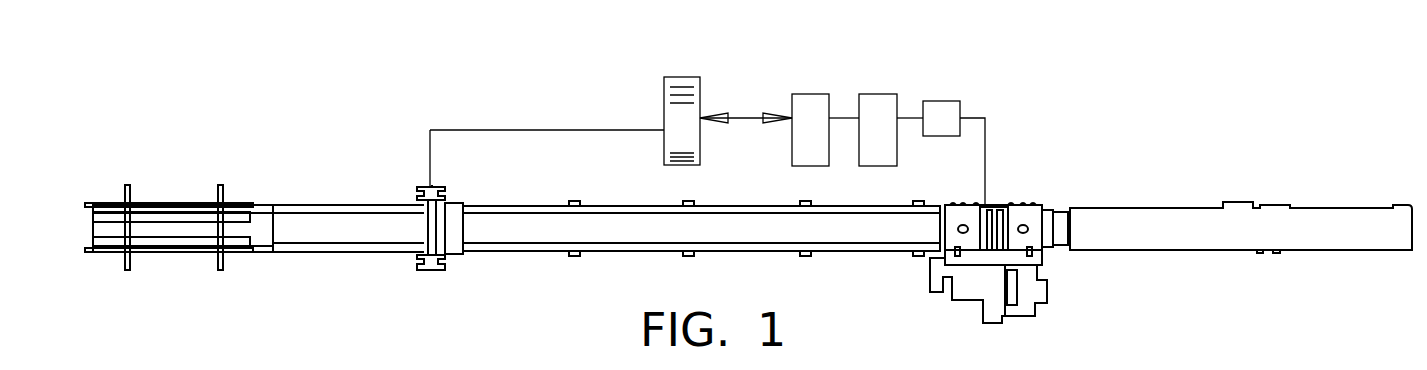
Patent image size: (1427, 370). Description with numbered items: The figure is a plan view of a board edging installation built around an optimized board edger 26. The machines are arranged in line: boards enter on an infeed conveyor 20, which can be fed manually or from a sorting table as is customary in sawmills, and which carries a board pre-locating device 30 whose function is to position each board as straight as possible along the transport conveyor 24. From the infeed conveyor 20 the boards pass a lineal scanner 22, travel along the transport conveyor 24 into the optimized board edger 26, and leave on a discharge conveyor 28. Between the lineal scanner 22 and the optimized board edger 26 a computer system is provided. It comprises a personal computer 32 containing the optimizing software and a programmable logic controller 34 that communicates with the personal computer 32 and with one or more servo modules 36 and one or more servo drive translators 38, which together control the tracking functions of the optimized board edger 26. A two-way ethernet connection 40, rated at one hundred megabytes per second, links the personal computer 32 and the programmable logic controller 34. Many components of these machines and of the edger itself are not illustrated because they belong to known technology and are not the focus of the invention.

The infeed conveyor 20 is at (237, 205).
The lineal scanner 22 is at (403, 218).
The transport conveyor 24 is at (513, 249).
The optimized board edger 26 is at (1037, 140).
The discharge conveyor 28 is at (1135, 208).
The board pre-locating device 30 is at (164, 222).
The personal computer (PC) 32 is at (664, 92).
The programmable logic controller (PLC) 34 is at (810, 94).
The servo module 36 is at (878, 94).
The servo drive translator 38 is at (937, 101).
The two-way ethernet connection 40 is at (743, 117).